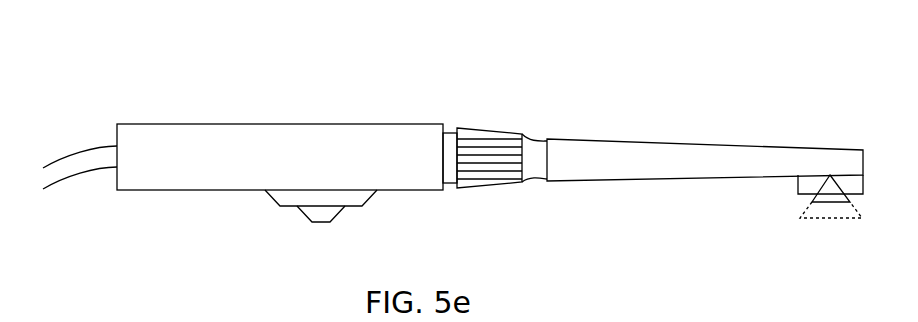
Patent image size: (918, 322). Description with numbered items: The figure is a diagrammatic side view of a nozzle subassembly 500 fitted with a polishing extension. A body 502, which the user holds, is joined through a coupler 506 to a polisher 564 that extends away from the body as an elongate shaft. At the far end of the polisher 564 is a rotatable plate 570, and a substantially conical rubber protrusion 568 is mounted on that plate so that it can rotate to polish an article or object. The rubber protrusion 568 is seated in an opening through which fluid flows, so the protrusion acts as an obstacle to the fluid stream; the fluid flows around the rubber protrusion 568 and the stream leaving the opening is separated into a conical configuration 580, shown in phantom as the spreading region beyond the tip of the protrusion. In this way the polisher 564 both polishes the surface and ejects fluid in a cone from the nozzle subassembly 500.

The nozzle subassembly 500 is at (667, 113).
The body 502 is at (328, 124).
The coupler 506 is at (490, 130).
The polisher 564 is at (675, 178).
The conical rubber protrusion 568 is at (835, 198).
The rotatable plate 570 is at (797, 183).
The conical configuration 580 is at (812, 220).